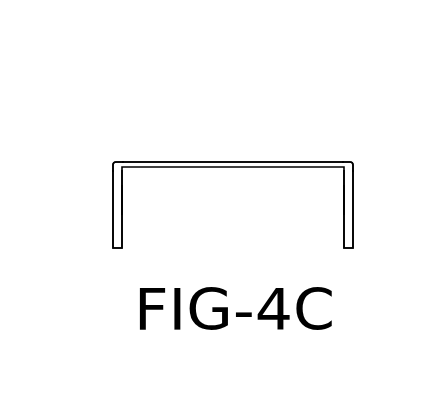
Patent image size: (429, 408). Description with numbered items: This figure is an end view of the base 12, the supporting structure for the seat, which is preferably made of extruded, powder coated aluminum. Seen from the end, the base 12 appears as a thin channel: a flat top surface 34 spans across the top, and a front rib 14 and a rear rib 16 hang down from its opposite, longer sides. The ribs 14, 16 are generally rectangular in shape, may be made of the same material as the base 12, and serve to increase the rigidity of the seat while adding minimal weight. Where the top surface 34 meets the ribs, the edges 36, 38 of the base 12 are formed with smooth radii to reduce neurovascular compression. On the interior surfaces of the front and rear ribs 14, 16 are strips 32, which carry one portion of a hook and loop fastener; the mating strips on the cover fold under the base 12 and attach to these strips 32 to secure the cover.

The base 12 is at (162, 160).
The front rib 14 is at (113, 207).
The rear rib 16 is at (353, 201).
The strips 32 is at (124, 197).
The top surface 34 is at (252, 162).
The edge 36 is at (112, 158).
The edge 38 is at (353, 163).